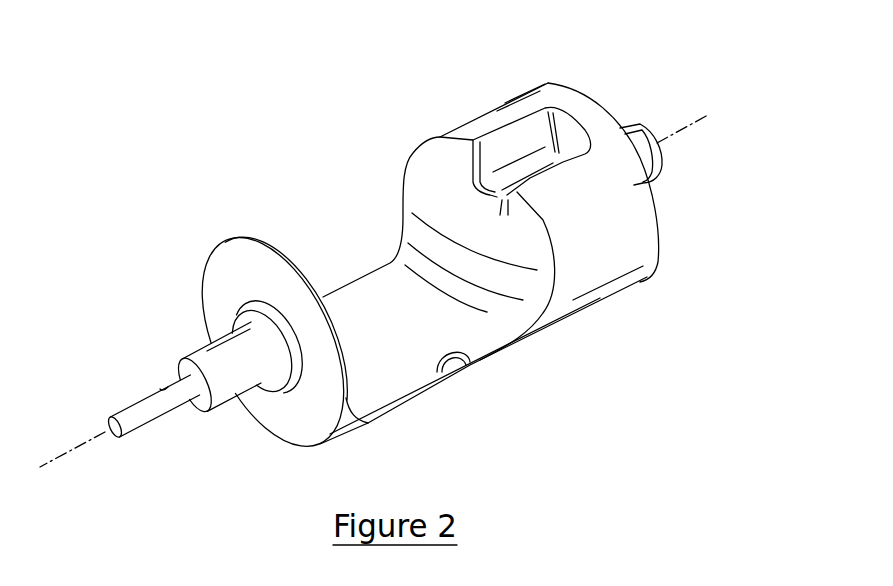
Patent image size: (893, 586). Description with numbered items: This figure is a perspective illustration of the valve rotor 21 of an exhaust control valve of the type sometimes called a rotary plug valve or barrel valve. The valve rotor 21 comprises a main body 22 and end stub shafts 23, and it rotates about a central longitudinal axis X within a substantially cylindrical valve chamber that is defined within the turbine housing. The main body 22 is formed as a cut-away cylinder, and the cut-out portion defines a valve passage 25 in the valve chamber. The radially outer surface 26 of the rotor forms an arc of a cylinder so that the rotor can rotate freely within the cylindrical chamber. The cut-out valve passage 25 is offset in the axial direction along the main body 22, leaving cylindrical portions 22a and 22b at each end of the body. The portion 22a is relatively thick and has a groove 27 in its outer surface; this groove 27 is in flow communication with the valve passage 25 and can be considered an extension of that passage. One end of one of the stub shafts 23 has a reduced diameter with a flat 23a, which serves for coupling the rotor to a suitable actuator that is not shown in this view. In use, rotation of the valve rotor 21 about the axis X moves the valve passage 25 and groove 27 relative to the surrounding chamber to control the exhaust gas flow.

The valve rotor 21 is at (162, 194).
The main body 22 is at (210, 287).
The cylindrical portion 22a is at (632, 237).
The cylindrical portion 22b is at (243, 240).
The end stub shafts 23 is at (203, 405).
The flat 23a is at (137, 400).
The valve passage 25 is at (352, 228).
The radially outer surface 26 is at (513, 345).
The groove 27 is at (522, 135).
The central longitudinal axis X is at (698, 115).